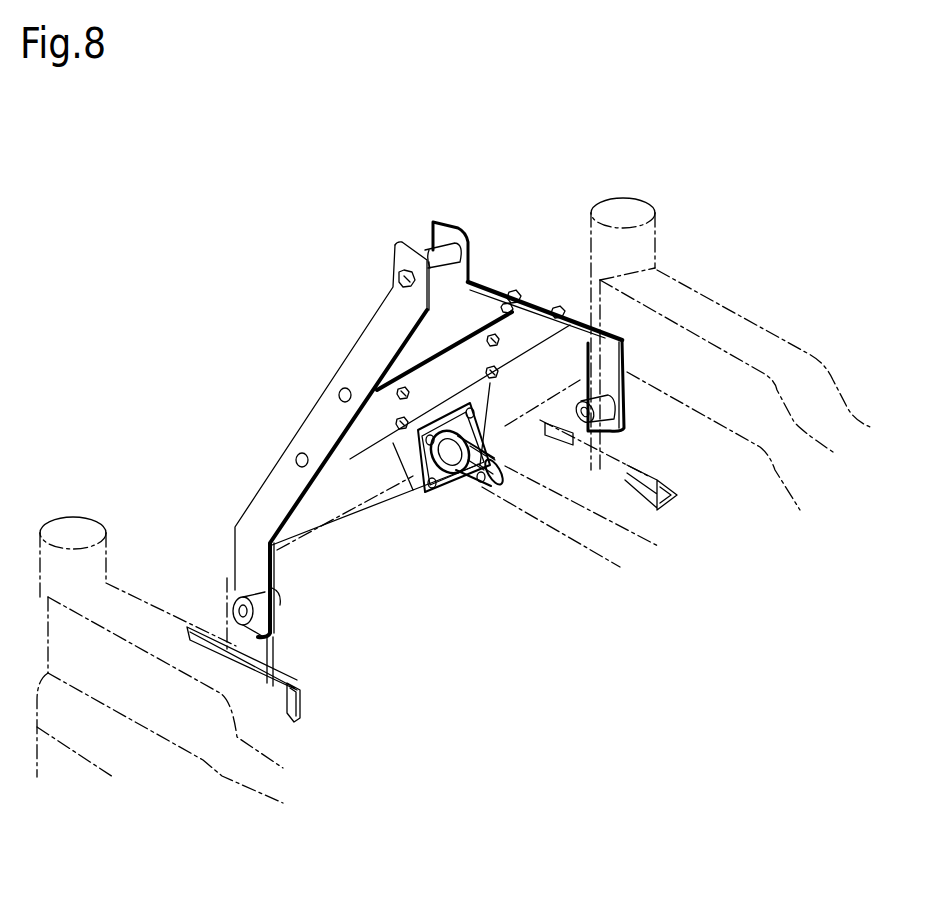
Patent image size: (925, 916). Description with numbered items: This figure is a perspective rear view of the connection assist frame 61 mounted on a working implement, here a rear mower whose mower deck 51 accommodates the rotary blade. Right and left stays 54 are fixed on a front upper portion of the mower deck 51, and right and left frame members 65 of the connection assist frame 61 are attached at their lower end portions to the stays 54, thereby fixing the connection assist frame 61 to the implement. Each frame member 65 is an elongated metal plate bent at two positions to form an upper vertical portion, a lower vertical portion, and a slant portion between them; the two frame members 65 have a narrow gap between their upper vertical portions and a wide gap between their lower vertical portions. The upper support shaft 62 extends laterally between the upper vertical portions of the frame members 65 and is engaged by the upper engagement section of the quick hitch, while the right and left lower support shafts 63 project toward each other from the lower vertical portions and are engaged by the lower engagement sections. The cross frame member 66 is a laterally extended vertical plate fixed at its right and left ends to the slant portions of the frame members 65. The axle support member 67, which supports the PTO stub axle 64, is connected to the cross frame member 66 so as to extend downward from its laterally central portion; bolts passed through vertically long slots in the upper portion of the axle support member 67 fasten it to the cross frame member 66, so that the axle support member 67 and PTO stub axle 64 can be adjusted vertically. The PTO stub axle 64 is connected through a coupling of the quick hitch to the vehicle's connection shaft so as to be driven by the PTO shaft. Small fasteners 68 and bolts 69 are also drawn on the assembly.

The mower deck 51 is at (215, 601).
The stays 54 is at (282, 656).
The connection assist frame 61 is at (459, 392).
The upper support shaft 62 is at (430, 252).
The lower support shafts 63 is at (283, 596).
The PTO stub axle 64 is at (494, 490).
The frame members 65 is at (385, 312).
The cross frame member 66 is at (355, 438).
The axle support member 67 is at (490, 423).
The support plate 68 is at (490, 395).
The bolt 69 is at (400, 420).